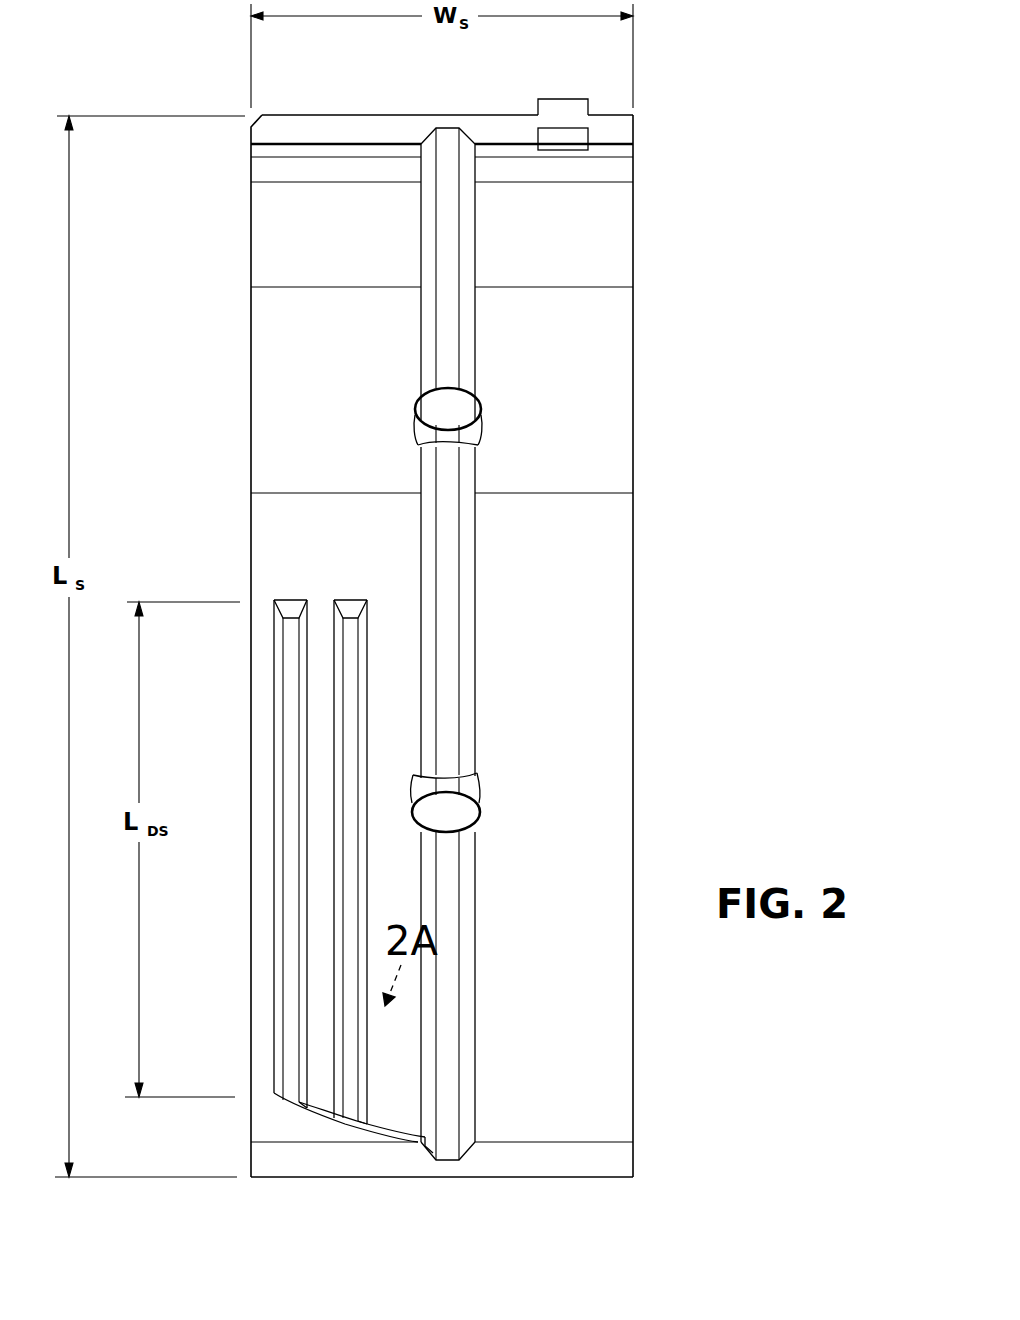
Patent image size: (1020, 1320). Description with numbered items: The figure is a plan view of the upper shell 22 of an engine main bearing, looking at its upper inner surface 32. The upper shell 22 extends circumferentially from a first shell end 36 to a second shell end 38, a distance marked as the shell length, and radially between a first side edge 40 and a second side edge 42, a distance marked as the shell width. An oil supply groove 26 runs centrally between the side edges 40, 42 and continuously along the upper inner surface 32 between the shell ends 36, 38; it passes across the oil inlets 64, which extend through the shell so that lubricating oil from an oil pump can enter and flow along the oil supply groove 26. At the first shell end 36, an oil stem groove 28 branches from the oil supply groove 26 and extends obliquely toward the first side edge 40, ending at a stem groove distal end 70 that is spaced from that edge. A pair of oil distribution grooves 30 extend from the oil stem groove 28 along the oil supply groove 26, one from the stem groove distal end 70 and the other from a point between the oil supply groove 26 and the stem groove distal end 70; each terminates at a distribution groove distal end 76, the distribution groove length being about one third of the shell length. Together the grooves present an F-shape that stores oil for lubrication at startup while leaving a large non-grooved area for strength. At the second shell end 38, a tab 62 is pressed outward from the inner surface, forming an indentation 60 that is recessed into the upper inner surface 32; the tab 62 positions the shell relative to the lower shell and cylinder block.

The upper shell 22 is at (694, 104).
The oil supply groove 26 is at (475, 527).
The oil stem groove 28 is at (342, 1122).
The oil distribution groove 30 is at (334, 748).
The upper inner surface 32 is at (620, 712).
The first shell end 36 is at (575, 1178).
The second shell end 38 is at (340, 115).
The first side edge 40 is at (251, 272).
The second side edge 42 is at (633, 333).
The indentation 60 is at (574, 148).
The tab 62 is at (555, 99).
The oil inlet 64 is at (420, 406).
The stem groove distal end 70 is at (274, 1081).
The distribution groove distal end 76 is at (290, 600).